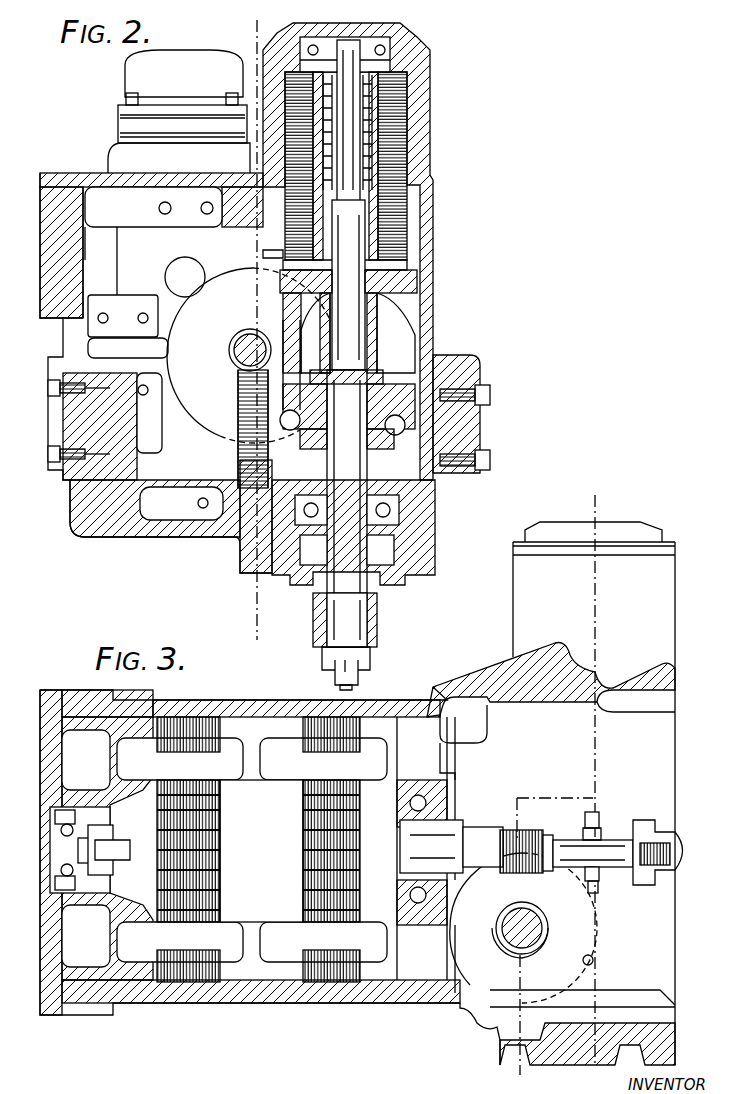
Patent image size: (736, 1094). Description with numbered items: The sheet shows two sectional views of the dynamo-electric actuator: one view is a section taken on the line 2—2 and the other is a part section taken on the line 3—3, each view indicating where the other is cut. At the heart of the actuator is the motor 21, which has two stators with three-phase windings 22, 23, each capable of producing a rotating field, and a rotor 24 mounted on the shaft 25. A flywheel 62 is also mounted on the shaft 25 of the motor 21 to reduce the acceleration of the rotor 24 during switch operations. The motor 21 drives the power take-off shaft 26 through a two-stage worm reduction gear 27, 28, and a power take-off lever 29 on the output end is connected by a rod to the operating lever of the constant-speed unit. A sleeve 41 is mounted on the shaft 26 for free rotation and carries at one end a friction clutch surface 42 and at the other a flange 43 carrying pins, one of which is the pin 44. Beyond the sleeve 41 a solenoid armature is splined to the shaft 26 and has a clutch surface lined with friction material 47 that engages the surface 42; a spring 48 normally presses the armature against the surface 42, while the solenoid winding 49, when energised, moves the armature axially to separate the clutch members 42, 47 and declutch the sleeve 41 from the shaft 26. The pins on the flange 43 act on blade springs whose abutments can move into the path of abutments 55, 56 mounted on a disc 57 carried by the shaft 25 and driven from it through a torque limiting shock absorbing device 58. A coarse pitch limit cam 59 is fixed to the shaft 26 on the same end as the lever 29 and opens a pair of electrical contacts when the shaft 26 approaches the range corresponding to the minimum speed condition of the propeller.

In FIG. 3, the section line 2— 2 is at (553, 510).
In FIG. 2, the section line 3— 3 is at (252, 37).
In FIG. 3, the motor 21 is at (233, 703).
In FIG. 3, the three-phase winding 22 is at (150, 757).
In FIG. 3, the three-phase winding 23 is at (315, 760).
In FIG. 3, the rotor 24 is at (272, 868).
In FIG. 2, the shaft 25 is at (240, 346).
In FIG. 3, the shaft 25 is at (455, 835).
In FIG. 2, the power take-off shaft 26 is at (352, 585).
In FIG. 2, the worm reduction gear 27 is at (238, 462).
In FIG. 3, the worm reduction gear 27 is at (500, 955).
In FIG. 2, the worm reduction gear 28 is at (440, 360).
In FIG. 2, the power take-off lever 29 is at (372, 625).
In FIG. 2, the sleeve 41 is at (390, 292).
In FIG. 2, the friction clutch surface 42 is at (395, 275).
In FIG. 2, the flange 43 is at (395, 332).
In FIG. 2, the pin 44 is at (292, 386).
In FIG. 2, the friction material 47 is at (425, 255).
In FIG. 2, the spring 48 is at (371, 251).
In FIG. 2, the solenoid winding 49 is at (390, 100).
In FIG. 3, the abutment 55 is at (596, 812).
In FIG. 3, the abutment 56 is at (592, 893).
In FIG. 3, the disc 57 is at (603, 882).
In FIG. 3, the torque limiting shock absorbing device 58 is at (678, 870).
In FIG. 2, the coarse pitch limit cam 59 is at (436, 500).
In FIG. 3, the flywheel 62 is at (100, 990).